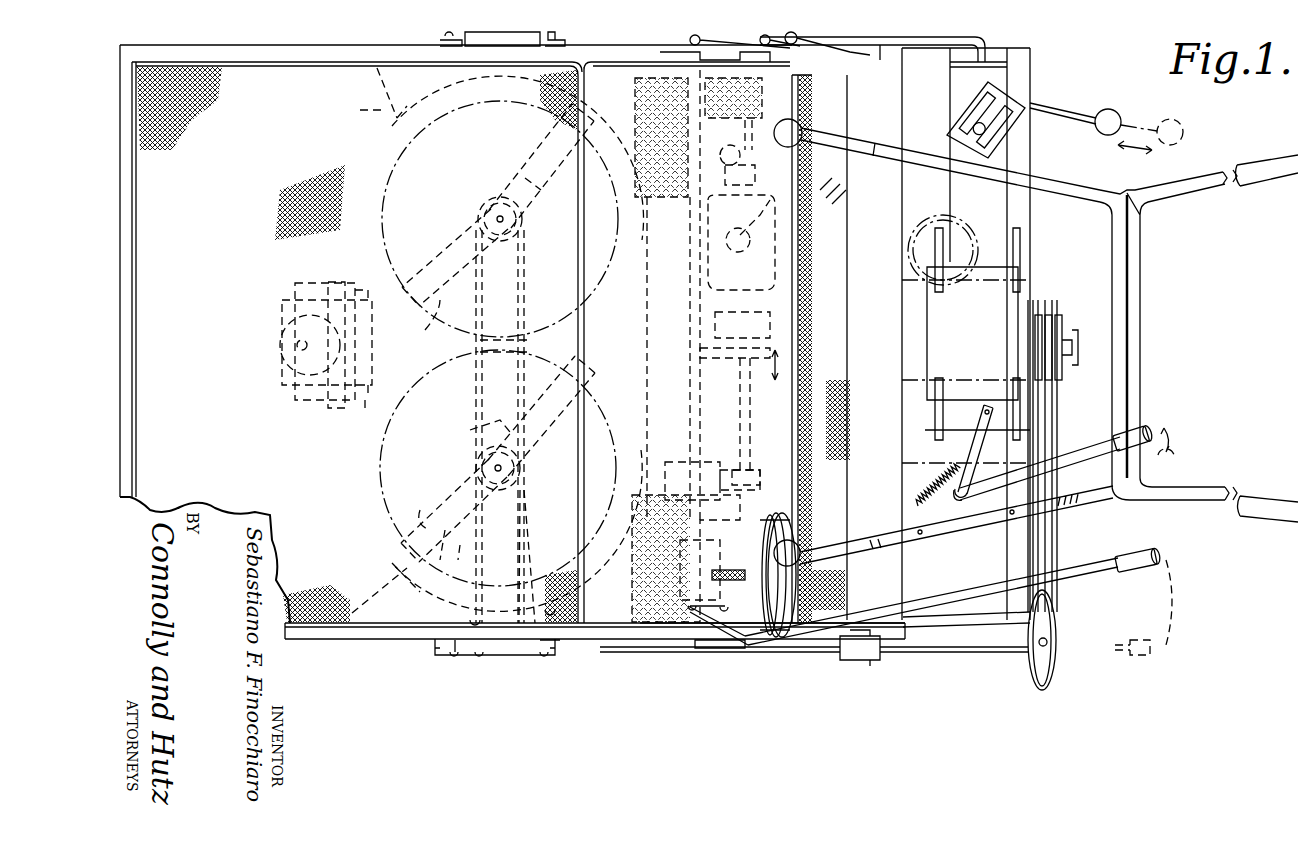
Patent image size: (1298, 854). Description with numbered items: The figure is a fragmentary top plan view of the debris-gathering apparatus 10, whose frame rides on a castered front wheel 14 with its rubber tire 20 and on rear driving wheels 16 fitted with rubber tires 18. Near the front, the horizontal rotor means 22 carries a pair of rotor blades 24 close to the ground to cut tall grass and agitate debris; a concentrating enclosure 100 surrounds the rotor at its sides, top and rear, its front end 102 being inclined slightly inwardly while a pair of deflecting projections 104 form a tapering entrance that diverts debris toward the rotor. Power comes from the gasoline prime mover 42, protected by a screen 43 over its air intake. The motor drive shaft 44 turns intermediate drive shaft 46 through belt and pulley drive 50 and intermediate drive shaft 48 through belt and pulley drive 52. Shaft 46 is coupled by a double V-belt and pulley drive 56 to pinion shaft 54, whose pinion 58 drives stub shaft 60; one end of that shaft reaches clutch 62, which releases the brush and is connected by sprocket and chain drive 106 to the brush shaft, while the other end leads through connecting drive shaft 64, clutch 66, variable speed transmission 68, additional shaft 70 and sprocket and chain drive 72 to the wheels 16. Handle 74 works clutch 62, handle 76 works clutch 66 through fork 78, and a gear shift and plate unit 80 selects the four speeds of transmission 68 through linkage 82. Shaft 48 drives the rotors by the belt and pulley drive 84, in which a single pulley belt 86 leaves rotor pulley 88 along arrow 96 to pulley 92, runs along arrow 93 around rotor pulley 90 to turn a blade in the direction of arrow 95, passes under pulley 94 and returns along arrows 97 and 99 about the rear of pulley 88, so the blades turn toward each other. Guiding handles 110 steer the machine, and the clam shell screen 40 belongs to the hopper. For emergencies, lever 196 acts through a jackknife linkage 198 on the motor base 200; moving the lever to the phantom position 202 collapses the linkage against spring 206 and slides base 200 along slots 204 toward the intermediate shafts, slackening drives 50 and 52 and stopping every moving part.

The debris-gathering apparatus 10 is at (779, 696).
The front wheel 14 is at (368, 300).
The rear wheels 16 is at (640, 100).
The rubber tires 18 is at (665, 605).
The rubber tire 20 is at (357, 419).
The horizontal rotor means 22 is at (440, 330).
The rotor blades 24 is at (530, 178).
The clam shell screen 40 is at (320, 640).
The prime mover 42 is at (910, 260).
The screen 43 is at (840, 196).
The motor drive shaft 44 is at (1040, 320).
The intermediate drive shaft 46 is at (950, 660).
The intermediate drive shaft 48 is at (918, 640).
The belt and pulley drive 50 is at (1040, 405).
The belt and pulley drive 52 is at (1054, 428).
The pinion shaft 54 is at (795, 540).
The double V-belt and pulley drive 56 is at (812, 590).
The pinion 58 is at (713, 571).
The stub shaft 60 is at (730, 550).
The clutch 62 is at (712, 625).
The connecting drive shaft 64 is at (745, 425).
The clutch 66 is at (795, 322).
The variable speed transmission 68 is at (770, 232).
The additional shaft 70 is at (797, 118).
The sprocket and chain drive 72 is at (668, 45).
The handle 74 is at (1135, 557).
The handle 76 is at (1072, 105).
The fork 78 is at (760, 365).
The gear shift and plate unit 80 is at (1000, 98).
The linkage 82 is at (890, 30).
The belt and pulley drive 84 is at (470, 430).
The pulley belt 86 is at (525, 346).
The rotor pulley 88 is at (492, 206).
The rotor pulley 90 is at (476, 468).
The pulley 92 is at (455, 657).
The arrow 93 is at (462, 545).
The pulley 94 is at (545, 657).
The arrow 95 is at (425, 520).
The arrow 96 is at (479, 305).
The arrow 97 is at (510, 545).
The arrow 99 is at (531, 302).
The concentrating enclosure 100 is at (625, 331).
The front end 102 is at (400, 126).
The deflecting projections 104 is at (362, 608).
The sprocket and chain drive 106 is at (748, 652).
The guiding handles 110 is at (1258, 185).
The lever 196 is at (1100, 455).
The jackknife linkage 198 is at (968, 449).
The motor base 200 is at (940, 340).
The phantom position 202 is at (1165, 480).
The slots 204 is at (1015, 228).
The spring 206 is at (950, 480).